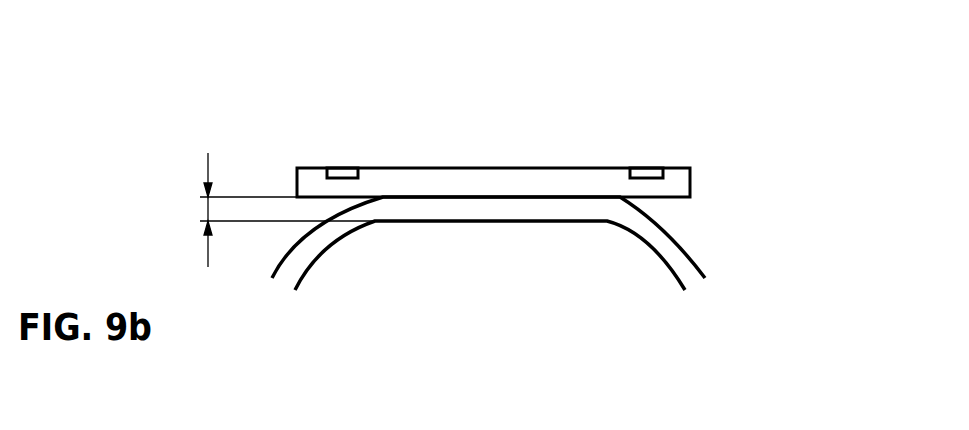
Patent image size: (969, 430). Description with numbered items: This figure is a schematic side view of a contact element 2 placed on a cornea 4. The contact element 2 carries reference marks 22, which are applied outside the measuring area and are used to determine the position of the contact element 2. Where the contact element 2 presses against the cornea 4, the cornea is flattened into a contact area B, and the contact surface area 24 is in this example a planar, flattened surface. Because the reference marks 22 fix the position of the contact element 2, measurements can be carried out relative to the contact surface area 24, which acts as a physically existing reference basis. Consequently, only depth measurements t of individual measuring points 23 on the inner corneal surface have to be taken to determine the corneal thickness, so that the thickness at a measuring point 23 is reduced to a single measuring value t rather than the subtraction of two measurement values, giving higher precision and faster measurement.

The contact element 2 is at (683, 183).
The reference marks 22 is at (343, 170).
The measuring points 23 is at (403, 222).
The contact surface area 24 is at (673, 200).
The cornea 4 is at (693, 277).
The contact area B is at (504, 199).
The depth measurement t is at (206, 208).